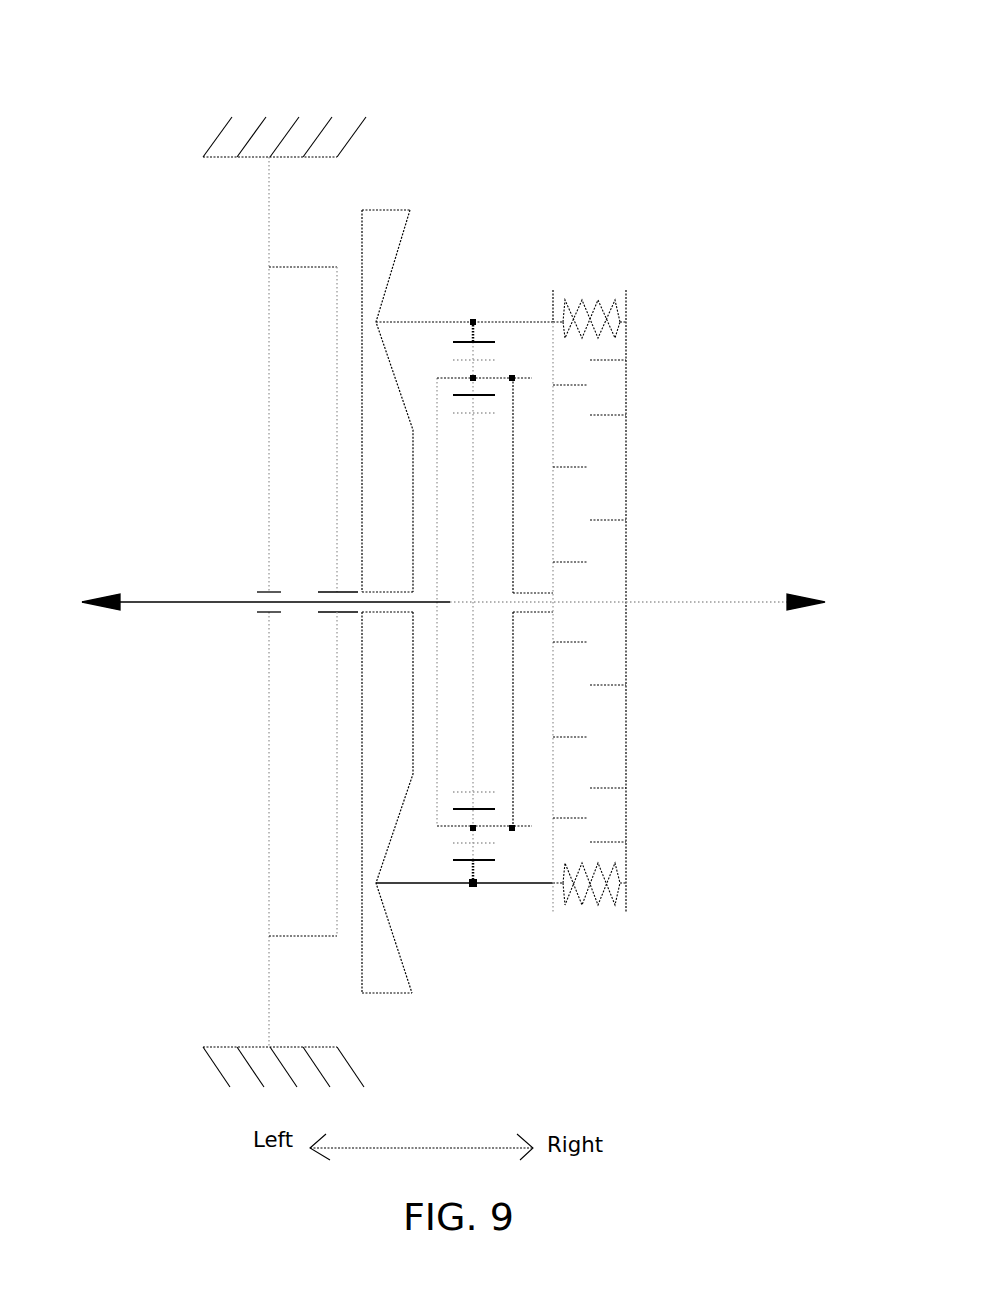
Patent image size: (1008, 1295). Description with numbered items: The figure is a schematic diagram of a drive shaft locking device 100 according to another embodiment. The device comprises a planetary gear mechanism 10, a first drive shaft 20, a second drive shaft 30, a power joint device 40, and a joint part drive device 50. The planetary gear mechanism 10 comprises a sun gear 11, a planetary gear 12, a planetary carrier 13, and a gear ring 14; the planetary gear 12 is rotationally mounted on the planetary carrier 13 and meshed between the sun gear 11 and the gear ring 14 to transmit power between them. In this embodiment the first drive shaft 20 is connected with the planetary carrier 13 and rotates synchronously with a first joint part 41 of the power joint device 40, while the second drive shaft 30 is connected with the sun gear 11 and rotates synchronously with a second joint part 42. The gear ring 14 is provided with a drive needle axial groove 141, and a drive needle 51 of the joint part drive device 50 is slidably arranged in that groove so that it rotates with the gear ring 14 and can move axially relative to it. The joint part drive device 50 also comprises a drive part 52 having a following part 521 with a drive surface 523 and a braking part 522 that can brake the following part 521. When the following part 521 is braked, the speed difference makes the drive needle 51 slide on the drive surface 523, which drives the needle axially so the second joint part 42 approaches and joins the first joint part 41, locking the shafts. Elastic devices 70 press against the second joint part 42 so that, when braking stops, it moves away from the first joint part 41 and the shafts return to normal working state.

The drive shaft locking device 100 is at (538, 108).
The planetary gear mechanism 10 is at (437, 616).
The sun gear 11 is at (470, 557).
The planetary gear 12 is at (487, 843).
The planetary carrier 13 is at (437, 497).
The gear ring 14 is at (518, 949).
The drive needle axial groove 141 is at (468, 883).
The first drive shaft 20 is at (176, 607).
The second drive shaft 30 is at (767, 608).
The power joint device 40 is at (680, 601).
The first joint part 41 is at (560, 785).
The second joint part 42 is at (627, 715).
The joint part drive device 50 is at (248, 242).
The drive needle 51 is at (528, 323).
The drive part 52 is at (309, 596).
The following part 521 is at (368, 332).
The braking part 522 is at (297, 425).
The drive surface 523 is at (377, 320).
The elastic devices 70 is at (627, 313).